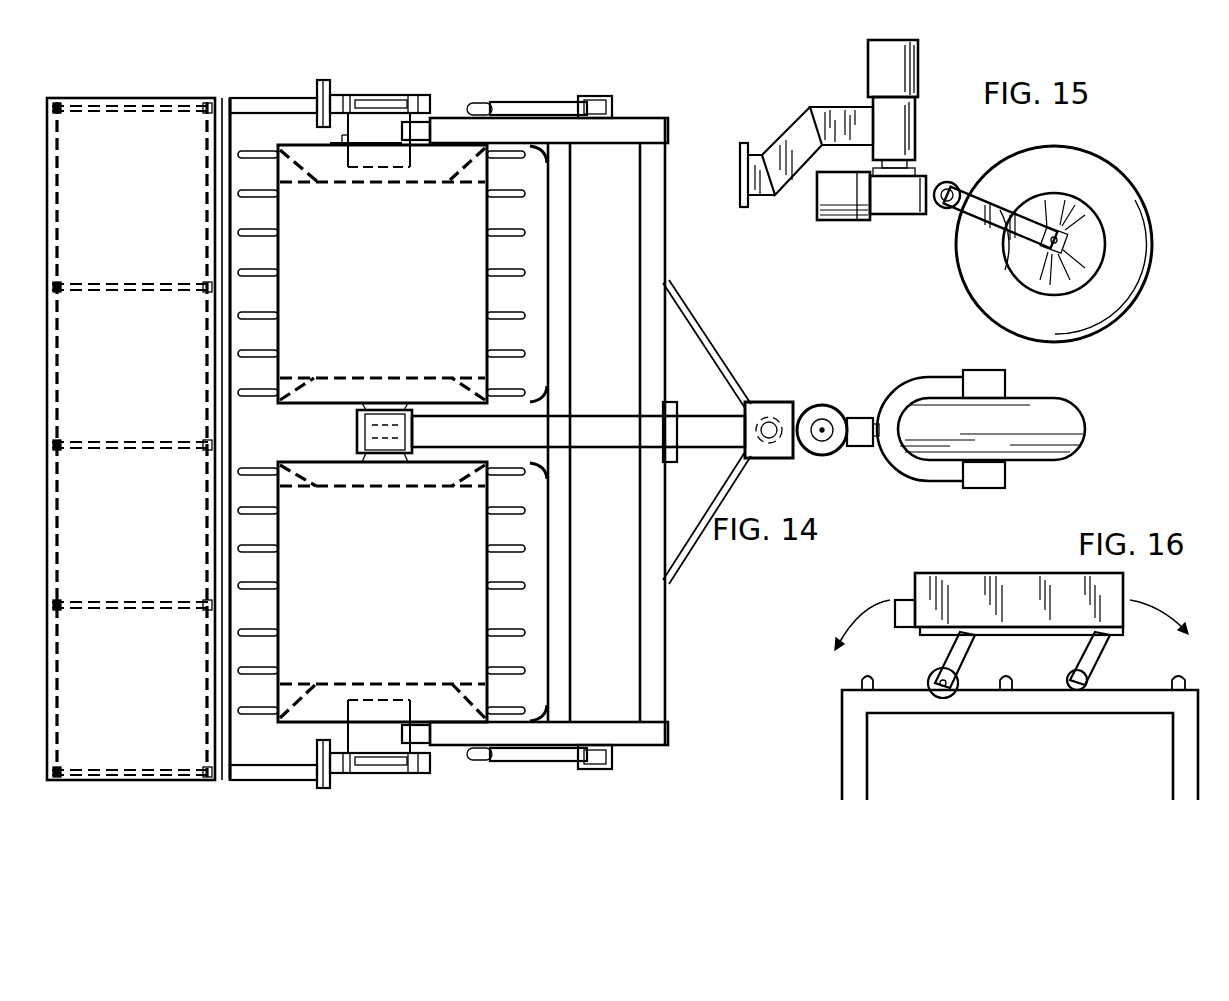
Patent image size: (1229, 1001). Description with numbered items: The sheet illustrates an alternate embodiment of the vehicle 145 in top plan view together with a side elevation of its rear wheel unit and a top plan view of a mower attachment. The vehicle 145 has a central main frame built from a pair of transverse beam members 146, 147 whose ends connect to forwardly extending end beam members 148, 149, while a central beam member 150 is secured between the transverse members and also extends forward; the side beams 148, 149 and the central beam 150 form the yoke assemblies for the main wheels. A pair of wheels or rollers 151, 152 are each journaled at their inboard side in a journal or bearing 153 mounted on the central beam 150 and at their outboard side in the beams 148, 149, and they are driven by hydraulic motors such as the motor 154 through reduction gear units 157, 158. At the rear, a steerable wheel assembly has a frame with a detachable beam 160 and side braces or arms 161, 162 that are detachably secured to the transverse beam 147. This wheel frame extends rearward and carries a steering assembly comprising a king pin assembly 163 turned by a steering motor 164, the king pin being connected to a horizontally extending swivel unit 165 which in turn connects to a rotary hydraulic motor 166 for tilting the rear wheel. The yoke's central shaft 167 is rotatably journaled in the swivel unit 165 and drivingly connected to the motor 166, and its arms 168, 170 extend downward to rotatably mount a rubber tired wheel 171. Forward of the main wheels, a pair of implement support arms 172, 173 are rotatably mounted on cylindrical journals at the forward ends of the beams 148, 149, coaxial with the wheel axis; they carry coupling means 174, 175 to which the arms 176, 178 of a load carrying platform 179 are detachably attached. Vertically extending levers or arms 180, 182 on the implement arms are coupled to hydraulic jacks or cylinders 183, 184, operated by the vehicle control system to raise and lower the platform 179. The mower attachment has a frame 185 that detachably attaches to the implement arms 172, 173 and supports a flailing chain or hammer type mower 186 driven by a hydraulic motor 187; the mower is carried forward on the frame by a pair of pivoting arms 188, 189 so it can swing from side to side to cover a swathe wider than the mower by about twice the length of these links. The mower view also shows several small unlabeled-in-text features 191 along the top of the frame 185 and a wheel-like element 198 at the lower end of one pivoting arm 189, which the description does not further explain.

In FIG. 14, the vehicle 145 is at (663, 34).
In FIG. 14, the transverse beam member 146 is at (568, 240).
In FIG. 14, the transverse beam member 147 is at (658, 233).
In FIG. 14, the end beam member 148 is at (655, 118).
In FIG. 14, the end beam member 149 is at (636, 745).
In FIG. 14, the central beam member 150 is at (607, 418).
In FIG. 14, the wheel or roller 151 is at (405, 282).
In FIG. 14, the wheel or roller 152 is at (403, 586).
In FIG. 14, the journal or bearing 153 is at (357, 432).
In FIG. 14, the hydraulic motor 154 is at (397, 118).
In FIG. 14, the reduction gear unit 157 is at (408, 158).
In FIG. 14, the reduction gear unit 158 is at (407, 707).
In FIG. 14, the detachable beam 160 is at (710, 425).
In FIG. 14, the side brace or arm 161 is at (688, 320).
In FIG. 14, the side brace or arm 162 is at (722, 478).
In FIG. 15, the king pin assembly 163 is at (914, 124).
In FIG. 14, the steering motor 164 is at (826, 410).
In FIG. 15, the steering motor 164 is at (916, 52).
In FIG. 15, the swivel unit 165 is at (897, 214).
In FIG. 15, the rotary hydraulic motor 166 is at (842, 220).
In FIG. 15, the central shaft 167 is at (932, 182).
In FIG. 14, the arm 168 is at (920, 384).
In FIG. 14, the arm 170 is at (942, 480).
In FIG. 14, the rubber tired wheel 171 is at (1044, 398).
In FIG. 14, the implement support arm 172 is at (340, 92).
In FIG. 14, the implement support arm 173 is at (358, 770).
In FIG. 14, the coupling means 174 is at (330, 88).
In FIG. 14, the coupling means 175 is at (325, 778).
In FIG. 14, the arm 176 is at (250, 98).
In FIG. 14, the arm 178 is at (278, 780).
In FIG. 14, the load carrying platform 179 is at (170, 98).
In FIG. 14, the vertically extending lever or arm 180 is at (385, 98).
In FIG. 14, the vertically extending lever or arm 182 is at (418, 770).
In FIG. 14, the hydraulic jack or cylinder 183 is at (530, 100).
In FIG. 14, the hydraulic jack or cylinder 184 is at (510, 757).
In FIG. 16, the frame 185 is at (1145, 690).
In FIG. 16, the mower 186 is at (1005, 574).
In FIG. 16, the hydraulic motor 187 is at (905, 600).
In FIG. 16, the pivoting arm 188 is at (1098, 656).
In FIG. 16, the pivoting arm 189 is at (948, 660).
In FIG. 16, the hook 191 is at (1006, 676).
In FIG. 16, the wheel 198 is at (945, 698).